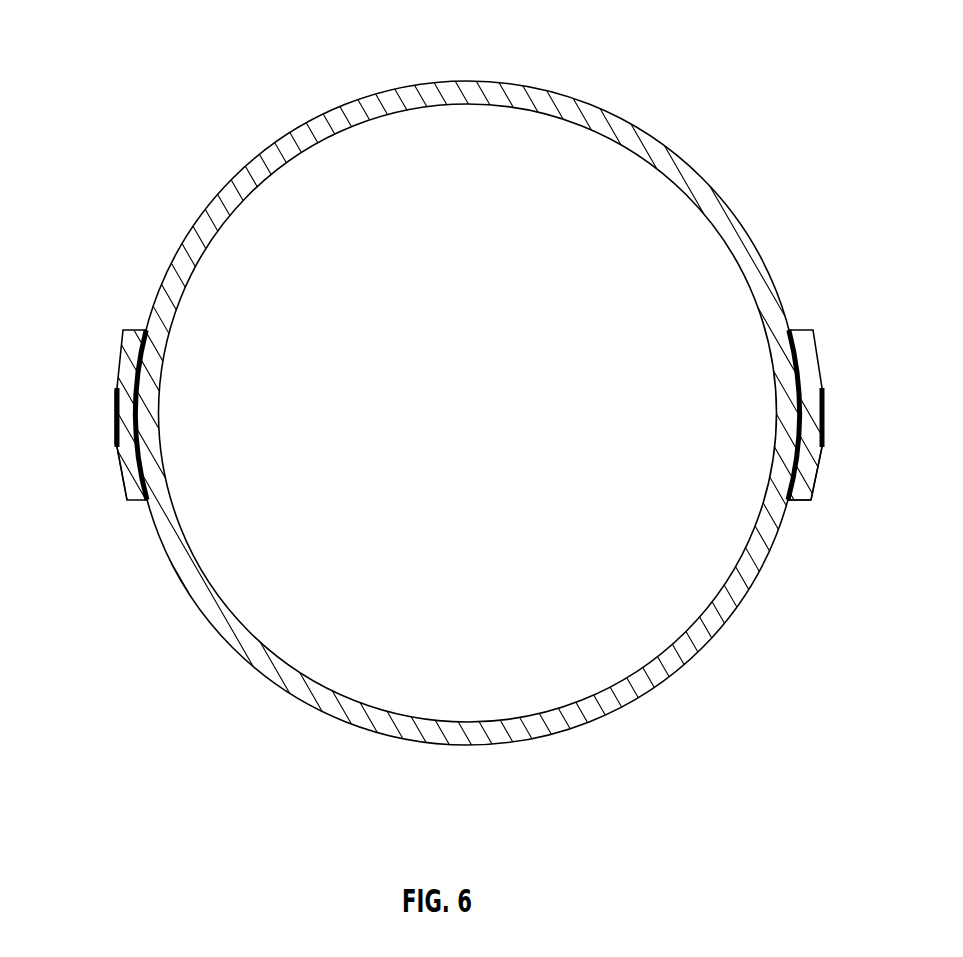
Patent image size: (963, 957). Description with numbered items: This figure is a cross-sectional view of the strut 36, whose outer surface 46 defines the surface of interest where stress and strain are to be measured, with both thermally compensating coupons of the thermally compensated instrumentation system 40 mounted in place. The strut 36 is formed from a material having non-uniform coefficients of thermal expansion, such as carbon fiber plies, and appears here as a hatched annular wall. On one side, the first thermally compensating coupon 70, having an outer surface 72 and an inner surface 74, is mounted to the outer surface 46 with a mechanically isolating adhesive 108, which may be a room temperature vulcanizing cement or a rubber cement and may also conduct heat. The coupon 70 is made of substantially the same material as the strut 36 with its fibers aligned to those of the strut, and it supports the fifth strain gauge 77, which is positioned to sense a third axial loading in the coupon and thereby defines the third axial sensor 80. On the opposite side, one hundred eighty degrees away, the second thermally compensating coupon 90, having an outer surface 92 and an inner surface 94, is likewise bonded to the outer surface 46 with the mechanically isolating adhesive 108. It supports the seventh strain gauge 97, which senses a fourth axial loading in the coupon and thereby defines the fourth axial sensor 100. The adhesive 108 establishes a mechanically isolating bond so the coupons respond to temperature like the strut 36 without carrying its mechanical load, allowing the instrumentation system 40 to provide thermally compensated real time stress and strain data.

The strut 36 is at (612, 714).
The outer surface 46 is at (522, 93).
The thermally compensated instrumentation system 40 is at (481, 415).
The outer surface 92 is at (121, 337).
The inner surface 94 is at (147, 335).
The fourth axial sensor 100 is at (113, 398).
The seventh strain gauge 97 is at (104, 432).
The second thermally compensating coupon 90 is at (126, 473).
The first thermally compensating coupon 70 is at (826, 345).
The inner surface 74 is at (795, 329).
The third axial sensor 80 is at (824, 399).
The fifth strain gauge 77 is at (832, 463).
The outer surface 72 is at (817, 488).
The mechanically isolating adhesive 108 is at (146, 506).